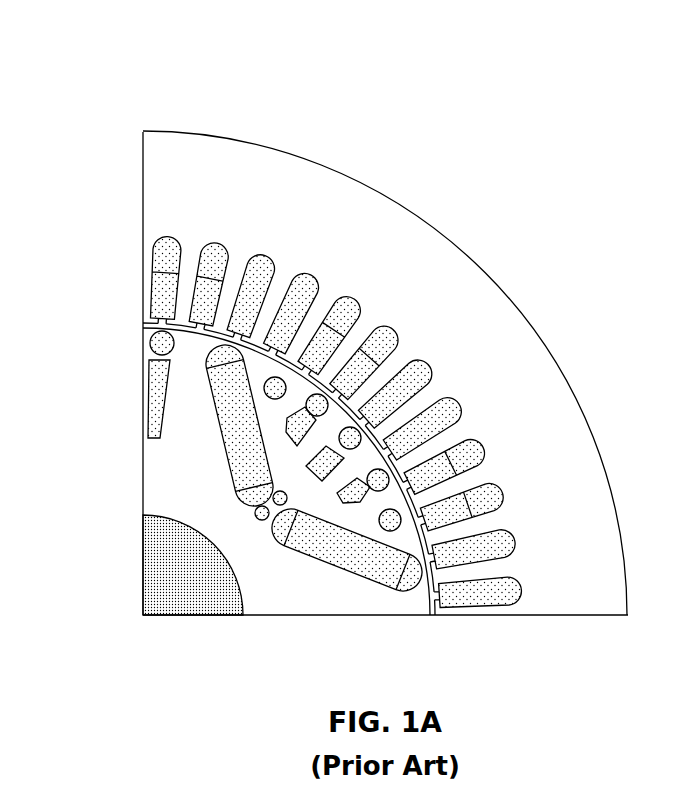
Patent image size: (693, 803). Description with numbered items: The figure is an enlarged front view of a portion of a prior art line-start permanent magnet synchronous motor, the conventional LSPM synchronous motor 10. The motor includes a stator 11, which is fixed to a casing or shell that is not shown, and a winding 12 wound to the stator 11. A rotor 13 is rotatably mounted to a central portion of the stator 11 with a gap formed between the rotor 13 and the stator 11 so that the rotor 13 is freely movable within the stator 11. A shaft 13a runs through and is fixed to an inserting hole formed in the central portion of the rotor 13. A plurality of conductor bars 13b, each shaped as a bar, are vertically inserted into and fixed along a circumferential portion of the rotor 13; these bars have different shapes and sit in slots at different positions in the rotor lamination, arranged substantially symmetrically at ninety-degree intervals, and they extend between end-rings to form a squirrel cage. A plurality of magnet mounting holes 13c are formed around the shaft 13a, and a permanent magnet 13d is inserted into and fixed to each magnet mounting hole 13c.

The LSPM synchronous motor 10 is at (147, 96).
The stator 11 is at (372, 179).
The winding 12 is at (404, 319).
The rotor 13 is at (372, 602).
The shaft 13a is at (200, 604).
The conductor bars 13b is at (152, 338).
The magnet mounting holes 13c is at (233, 427).
The permanent magnet 13d is at (247, 468).